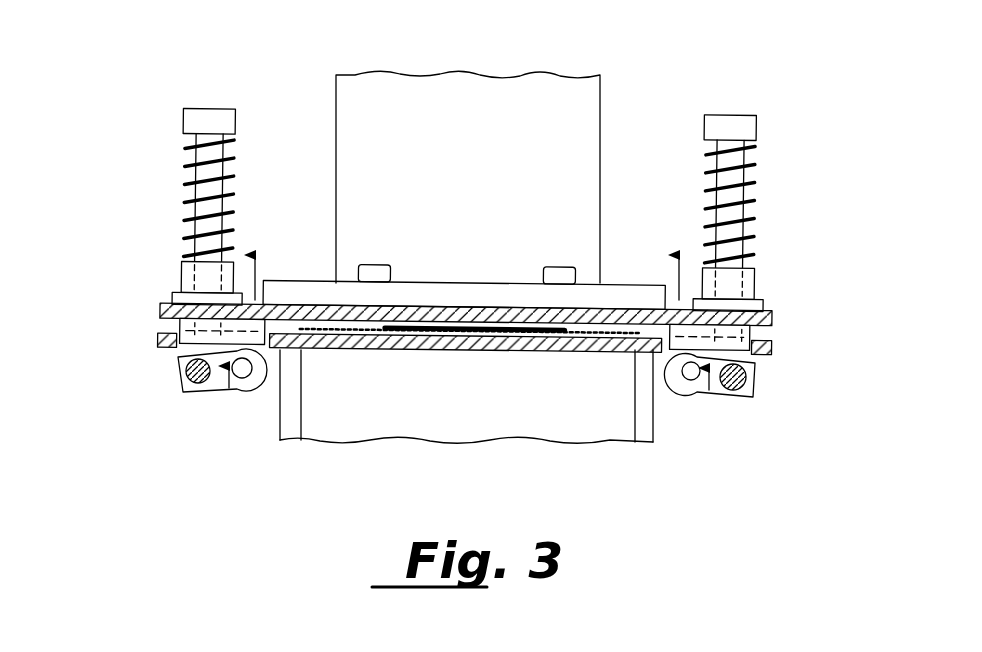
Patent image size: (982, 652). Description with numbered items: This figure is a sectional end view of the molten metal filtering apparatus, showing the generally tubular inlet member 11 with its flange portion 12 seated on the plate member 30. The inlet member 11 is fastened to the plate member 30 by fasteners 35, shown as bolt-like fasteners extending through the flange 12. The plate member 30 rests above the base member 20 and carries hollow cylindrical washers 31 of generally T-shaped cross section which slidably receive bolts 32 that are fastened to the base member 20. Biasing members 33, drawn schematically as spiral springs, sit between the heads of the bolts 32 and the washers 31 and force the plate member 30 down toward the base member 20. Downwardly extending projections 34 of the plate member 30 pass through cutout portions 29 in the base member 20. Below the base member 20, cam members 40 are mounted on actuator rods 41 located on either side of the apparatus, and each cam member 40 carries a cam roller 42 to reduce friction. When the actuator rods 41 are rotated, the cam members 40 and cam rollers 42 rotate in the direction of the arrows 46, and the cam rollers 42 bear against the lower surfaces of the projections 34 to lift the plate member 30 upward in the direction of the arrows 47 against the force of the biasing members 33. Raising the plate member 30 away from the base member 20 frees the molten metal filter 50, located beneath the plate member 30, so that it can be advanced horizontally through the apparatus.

The inlet member 11 is at (383, 108).
The flange portion 12 is at (316, 295).
The base member 20 is at (770, 350).
The cutout portions 29 is at (175, 348).
The plate member 30 is at (165, 310).
The hollow cylindrical washers 31 is at (185, 272).
The bolts 32 is at (196, 118).
The biasing members 33 is at (185, 197).
The downwardly extending projections 34 is at (165, 323).
The fasteners 35 is at (377, 272).
The cam members 40 is at (221, 393).
The actuator rods 41 is at (193, 390).
The cam rollers 42 is at (258, 393).
The arrows 46 is at (232, 393).
The arrows 47 is at (258, 265).
The molten metal filter 50 is at (430, 355).